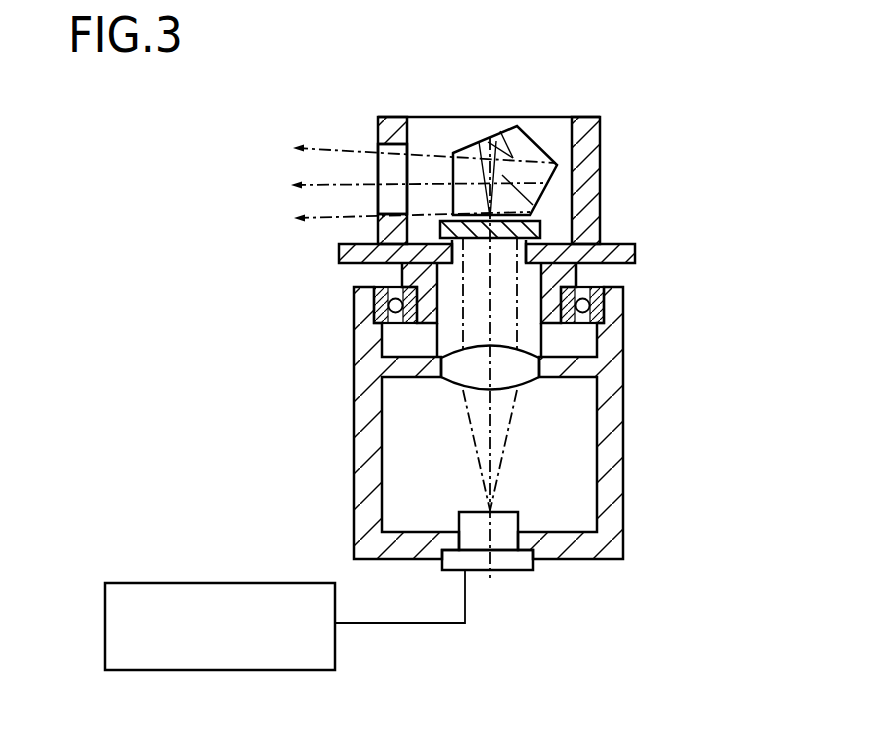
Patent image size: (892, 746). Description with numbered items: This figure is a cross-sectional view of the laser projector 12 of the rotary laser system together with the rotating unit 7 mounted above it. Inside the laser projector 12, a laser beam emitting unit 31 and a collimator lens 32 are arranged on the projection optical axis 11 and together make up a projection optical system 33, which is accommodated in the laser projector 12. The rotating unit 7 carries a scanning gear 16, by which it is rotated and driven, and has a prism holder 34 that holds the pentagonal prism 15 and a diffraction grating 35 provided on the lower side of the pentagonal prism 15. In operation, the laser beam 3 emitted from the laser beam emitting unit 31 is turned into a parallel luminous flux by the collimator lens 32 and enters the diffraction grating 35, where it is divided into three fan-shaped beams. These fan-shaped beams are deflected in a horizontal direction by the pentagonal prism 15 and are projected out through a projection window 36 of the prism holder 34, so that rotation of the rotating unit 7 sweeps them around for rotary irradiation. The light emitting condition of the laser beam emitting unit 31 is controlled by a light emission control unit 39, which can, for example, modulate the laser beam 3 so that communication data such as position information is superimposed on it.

The laser beam 3 is at (345, 148).
The rotating unit 7 is at (600, 183).
The projection optical axis 11 is at (490, 320).
The laser projector 12 is at (625, 472).
The pentagonal prism 15 is at (542, 143).
The scanning gear 16 is at (622, 243).
The laser beam emitting unit 31 is at (520, 570).
The collimator lens 32 is at (538, 383).
The projection optical system 33 is at (468, 449).
The prism holder 34 is at (575, 212).
The diffraction grating 35 is at (573, 265).
The projection window 36 is at (380, 173).
The light emission control unit 39 is at (218, 583).